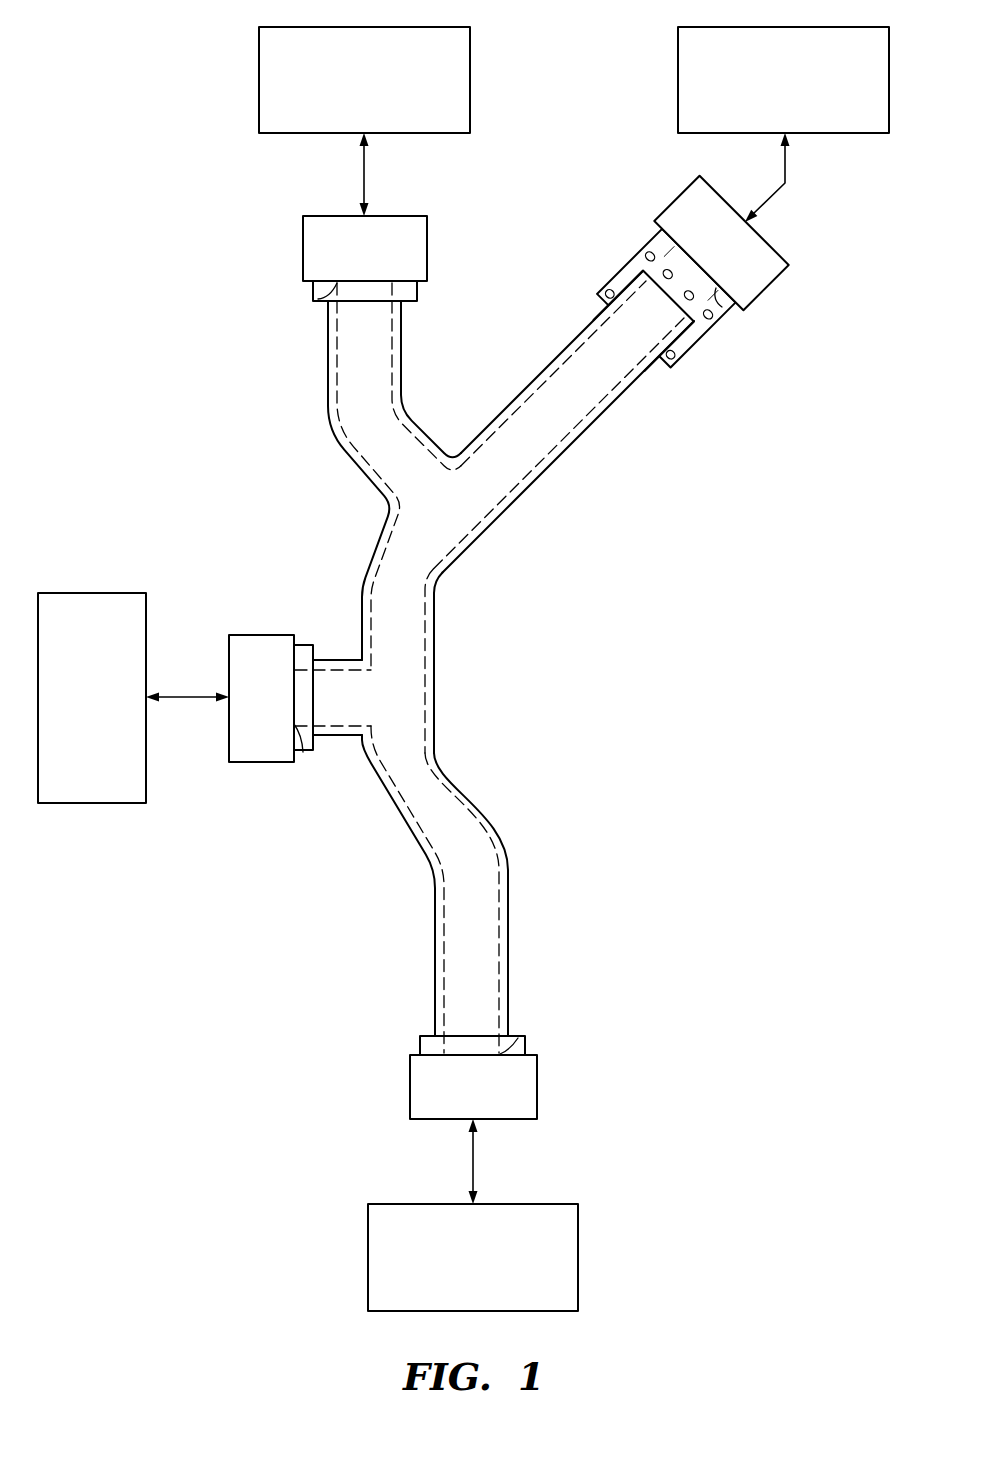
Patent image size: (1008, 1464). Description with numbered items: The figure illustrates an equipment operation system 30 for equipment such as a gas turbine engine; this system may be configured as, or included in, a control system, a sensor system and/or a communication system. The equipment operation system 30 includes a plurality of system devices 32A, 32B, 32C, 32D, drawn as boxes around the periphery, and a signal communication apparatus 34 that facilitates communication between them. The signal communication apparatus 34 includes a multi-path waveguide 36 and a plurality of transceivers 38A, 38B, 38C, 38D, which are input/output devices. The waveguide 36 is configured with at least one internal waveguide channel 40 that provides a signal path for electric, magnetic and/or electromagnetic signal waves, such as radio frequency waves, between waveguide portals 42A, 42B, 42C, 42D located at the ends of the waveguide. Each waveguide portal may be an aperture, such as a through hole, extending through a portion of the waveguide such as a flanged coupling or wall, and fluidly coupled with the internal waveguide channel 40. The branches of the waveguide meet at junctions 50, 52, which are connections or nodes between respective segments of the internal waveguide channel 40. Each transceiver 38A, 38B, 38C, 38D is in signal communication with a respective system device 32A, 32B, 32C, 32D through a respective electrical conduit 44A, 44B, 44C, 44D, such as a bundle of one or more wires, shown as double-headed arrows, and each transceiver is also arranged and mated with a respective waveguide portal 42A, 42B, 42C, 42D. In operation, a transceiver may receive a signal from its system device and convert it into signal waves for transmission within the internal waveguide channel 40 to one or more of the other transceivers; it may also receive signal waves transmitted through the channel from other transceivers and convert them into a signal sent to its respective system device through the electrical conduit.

The equipment operation system 30 is at (127, 90).
The system device 32A is at (579, 1260).
The system device 32B is at (89, 804).
The system device 32C is at (470, 57).
The system device 32D is at (678, 97).
The signal communication apparatus 34 is at (560, 662).
The multi-path waveguide 36 is at (512, 826).
The transceiver 38A is at (537, 1083).
The transceiver 38B is at (258, 762).
The transceiver 38C is at (303, 252).
The transceiver 38D is at (667, 208).
The internal waveguide channel 40 is at (439, 613).
The waveguide portal 42A is at (500, 1053).
The waveguide portal 42B is at (303, 752).
The waveguide portal 42C is at (318, 299).
The waveguide portal 42D is at (722, 307).
The electrical conduit 44A is at (475, 1155).
The electrical conduit 44B is at (190, 698).
The electrical conduit 44C is at (364, 168).
The electrical conduit 44D is at (773, 197).
The junction 50 is at (453, 708).
The junction 52 is at (499, 537).